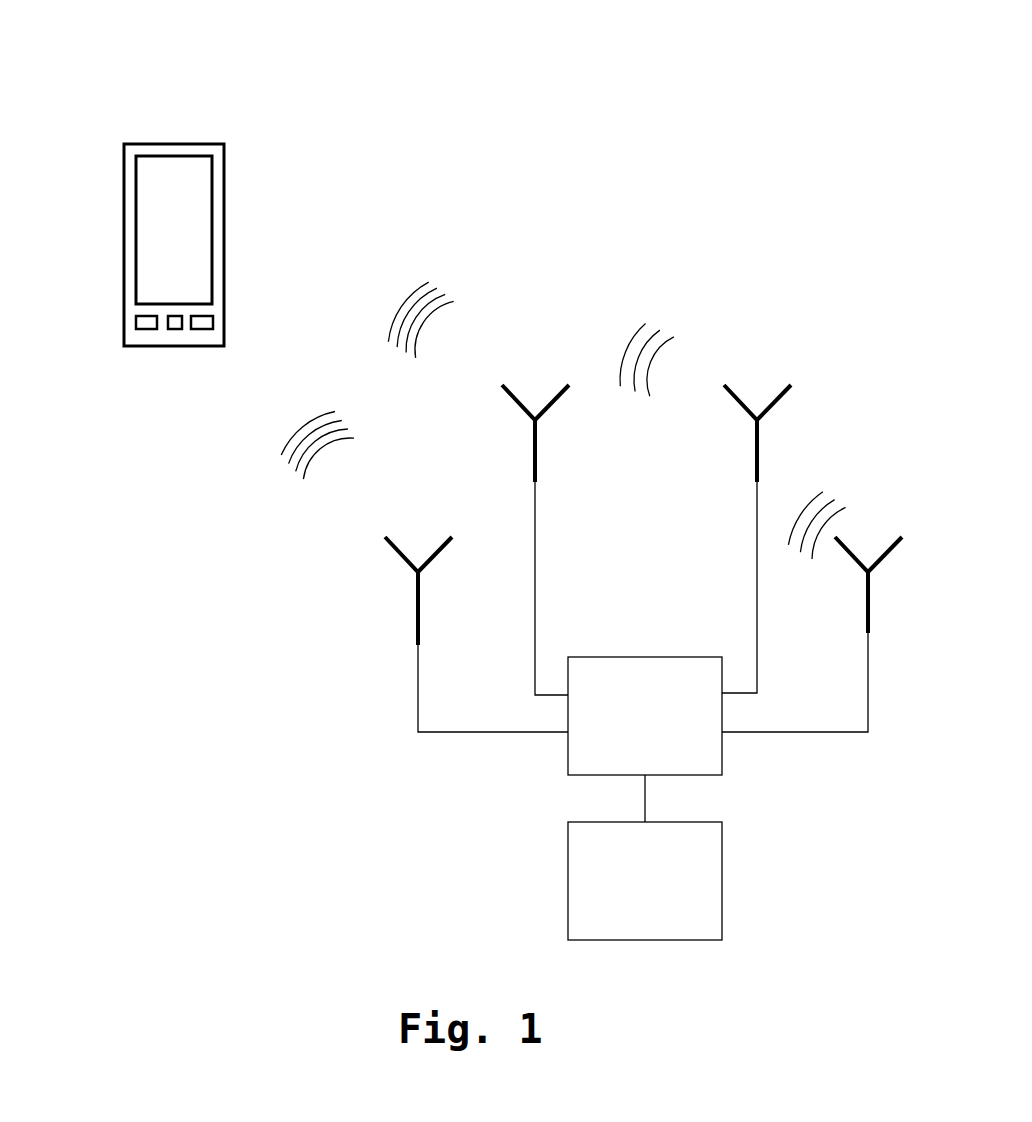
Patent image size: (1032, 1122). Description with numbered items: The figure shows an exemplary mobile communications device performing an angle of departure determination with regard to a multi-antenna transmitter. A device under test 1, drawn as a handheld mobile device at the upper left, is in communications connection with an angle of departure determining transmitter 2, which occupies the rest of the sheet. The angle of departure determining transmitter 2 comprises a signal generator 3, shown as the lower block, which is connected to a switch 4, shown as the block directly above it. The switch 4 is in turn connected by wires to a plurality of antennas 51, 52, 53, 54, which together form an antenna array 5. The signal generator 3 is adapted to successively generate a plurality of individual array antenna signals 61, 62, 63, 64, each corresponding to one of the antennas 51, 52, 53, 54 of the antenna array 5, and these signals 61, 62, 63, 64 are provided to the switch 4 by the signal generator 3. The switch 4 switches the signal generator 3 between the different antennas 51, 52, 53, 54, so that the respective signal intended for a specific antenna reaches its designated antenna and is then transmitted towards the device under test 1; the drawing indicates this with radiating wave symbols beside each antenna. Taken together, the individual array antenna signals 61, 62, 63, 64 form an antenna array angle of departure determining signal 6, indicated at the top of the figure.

The device under test 1 is at (200, 142).
The angle of departure determining transmitter 2 is at (122, 833).
The signal generator 3 is at (722, 907).
The switch 4 is at (722, 752).
The antenna array 5 is at (199, 613).
The antenna array angle of departure determining signal 6 is at (636, 86).
The antenna 51 is at (412, 600).
The antenna 52 is at (532, 458).
The antenna 53 is at (755, 468).
The antenna 54 is at (866, 612).
The individual array antenna signal 61 is at (261, 476).
The individual array antenna signal 62 is at (455, 256).
The individual array antenna signal 63 is at (673, 293).
The individual array antenna signal 64 is at (844, 463).